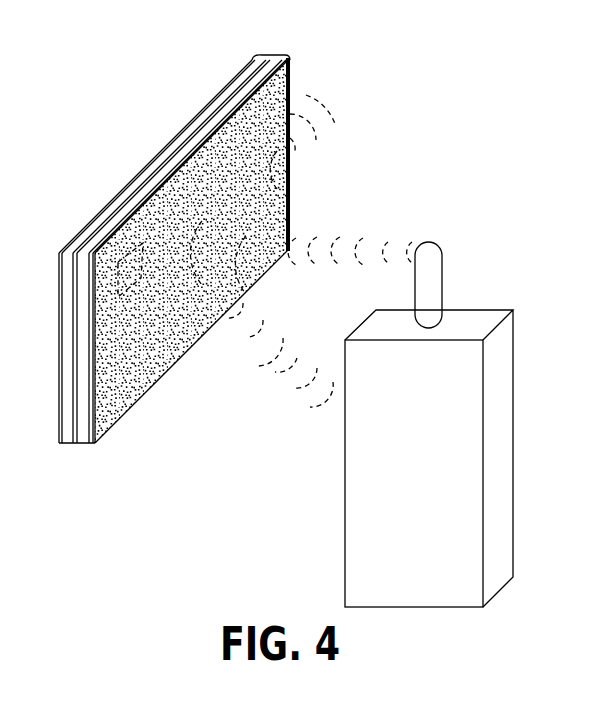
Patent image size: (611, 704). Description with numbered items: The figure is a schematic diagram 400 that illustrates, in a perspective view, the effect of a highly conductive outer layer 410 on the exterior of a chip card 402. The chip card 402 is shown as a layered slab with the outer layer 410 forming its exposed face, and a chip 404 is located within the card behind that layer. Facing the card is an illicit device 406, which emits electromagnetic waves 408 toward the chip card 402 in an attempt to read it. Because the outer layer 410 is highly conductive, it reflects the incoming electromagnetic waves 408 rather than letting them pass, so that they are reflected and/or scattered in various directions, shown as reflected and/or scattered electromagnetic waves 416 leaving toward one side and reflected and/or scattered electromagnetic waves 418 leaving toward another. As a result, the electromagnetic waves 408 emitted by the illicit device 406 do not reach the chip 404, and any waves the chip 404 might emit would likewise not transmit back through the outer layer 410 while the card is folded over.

The schematic diagram 400 is at (513, 168).
The chip card 402 is at (300, 188).
The chip 404 is at (116, 236).
The illicit device 406 is at (498, 458).
The electromagnetic waves 408 is at (335, 266).
The outer layer 410 is at (134, 387).
The reflected and/or scattered electromagnetic waves 416 is at (334, 100).
The reflected and/or scattered electromagnetic waves 418 is at (258, 364).